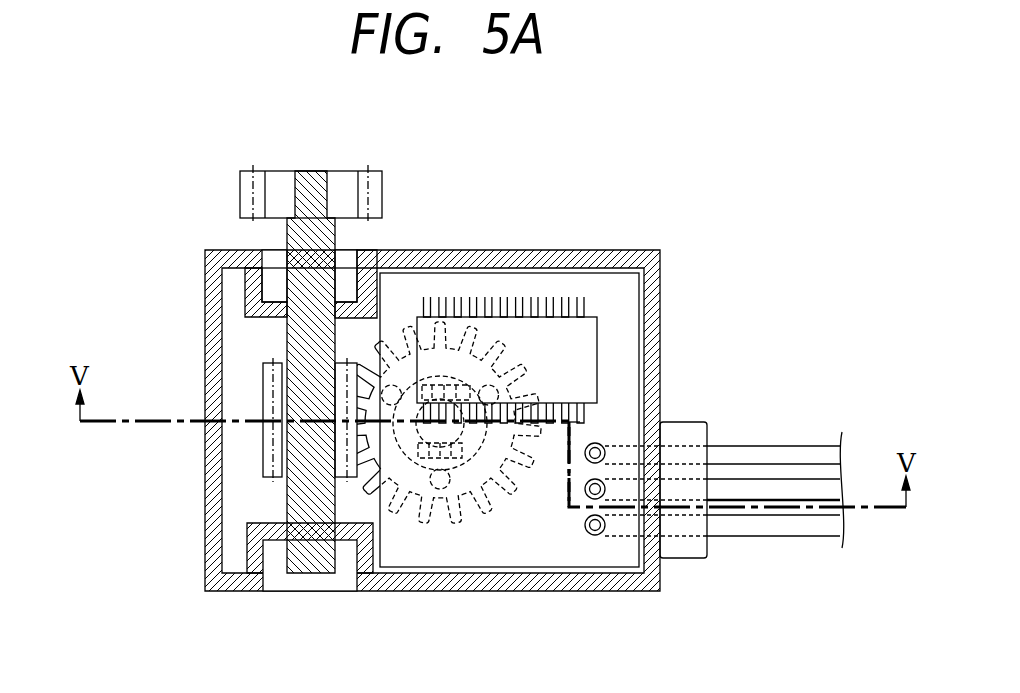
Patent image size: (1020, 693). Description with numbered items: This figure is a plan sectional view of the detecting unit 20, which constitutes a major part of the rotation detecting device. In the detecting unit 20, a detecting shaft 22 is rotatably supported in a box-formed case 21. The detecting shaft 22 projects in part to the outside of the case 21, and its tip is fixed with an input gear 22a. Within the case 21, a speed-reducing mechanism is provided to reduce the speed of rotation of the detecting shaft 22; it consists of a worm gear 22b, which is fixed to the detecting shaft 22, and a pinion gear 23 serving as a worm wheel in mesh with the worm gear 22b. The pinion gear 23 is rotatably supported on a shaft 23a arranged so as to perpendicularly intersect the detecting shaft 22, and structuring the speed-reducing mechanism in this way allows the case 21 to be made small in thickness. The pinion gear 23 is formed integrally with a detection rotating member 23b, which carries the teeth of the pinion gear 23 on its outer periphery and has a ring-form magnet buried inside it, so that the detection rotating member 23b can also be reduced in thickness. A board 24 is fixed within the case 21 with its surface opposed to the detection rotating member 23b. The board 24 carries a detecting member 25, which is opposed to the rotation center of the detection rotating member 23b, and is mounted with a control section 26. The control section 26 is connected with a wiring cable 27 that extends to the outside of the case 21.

The detecting unit 20 is at (491, 366).
The case 21 is at (531, 256).
The detecting shaft 22 is at (301, 367).
The input gear 22a is at (383, 188).
The worm gear 22b is at (265, 445).
The pinion gear 23 is at (440, 473).
The shaft 23a is at (418, 498).
The detection rotating member 23b is at (470, 495).
The board 24 is at (623, 303).
The detecting member 25 is at (620, 490).
The control section 26 is at (587, 356).
The wiring cable 27 is at (790, 527).